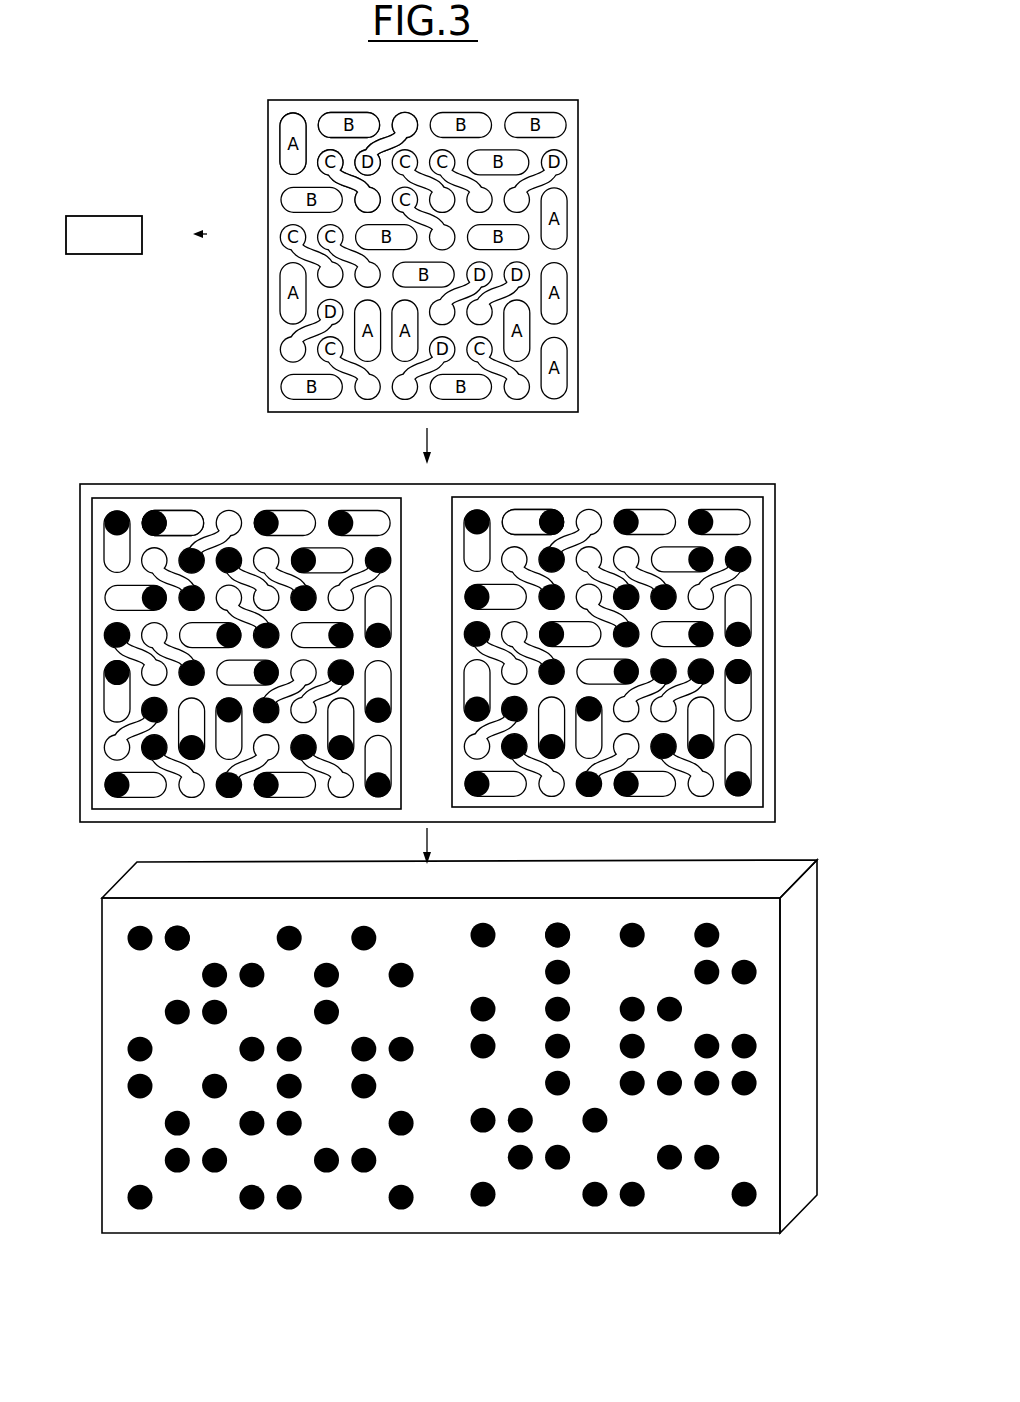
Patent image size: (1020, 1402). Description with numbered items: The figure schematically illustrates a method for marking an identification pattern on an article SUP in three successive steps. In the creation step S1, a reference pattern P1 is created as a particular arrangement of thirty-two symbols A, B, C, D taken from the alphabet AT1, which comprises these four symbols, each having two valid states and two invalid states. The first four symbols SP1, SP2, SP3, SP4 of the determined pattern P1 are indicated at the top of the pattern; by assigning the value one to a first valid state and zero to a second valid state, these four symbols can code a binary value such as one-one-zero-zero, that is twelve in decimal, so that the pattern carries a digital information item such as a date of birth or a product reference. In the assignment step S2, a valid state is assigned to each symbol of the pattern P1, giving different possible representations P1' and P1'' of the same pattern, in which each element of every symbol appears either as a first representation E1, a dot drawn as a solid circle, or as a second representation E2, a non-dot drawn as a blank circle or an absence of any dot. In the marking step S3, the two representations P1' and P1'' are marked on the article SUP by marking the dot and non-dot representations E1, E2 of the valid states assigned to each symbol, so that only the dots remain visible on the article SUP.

The first symbol SP1 is at (288, 112).
The second symbol SP2 is at (346, 112).
The third symbol SP3 is at (316, 166).
The fourth symbol SP4 is at (400, 112).
The creation step S1 is at (179, 236).
The alphabet AT1 is at (104, 235).
The reference pattern P1 is at (389, 256).
The assignment step S2 is at (425, 443).
The first representation E1 is at (154, 510).
The second representation E2 is at (192, 520).
The first representation of the pattern P1' is at (246, 628).
The second representation of the pattern P1'' is at (607, 625).
The marking step S3 is at (425, 843).
The article SUP is at (121, 880).